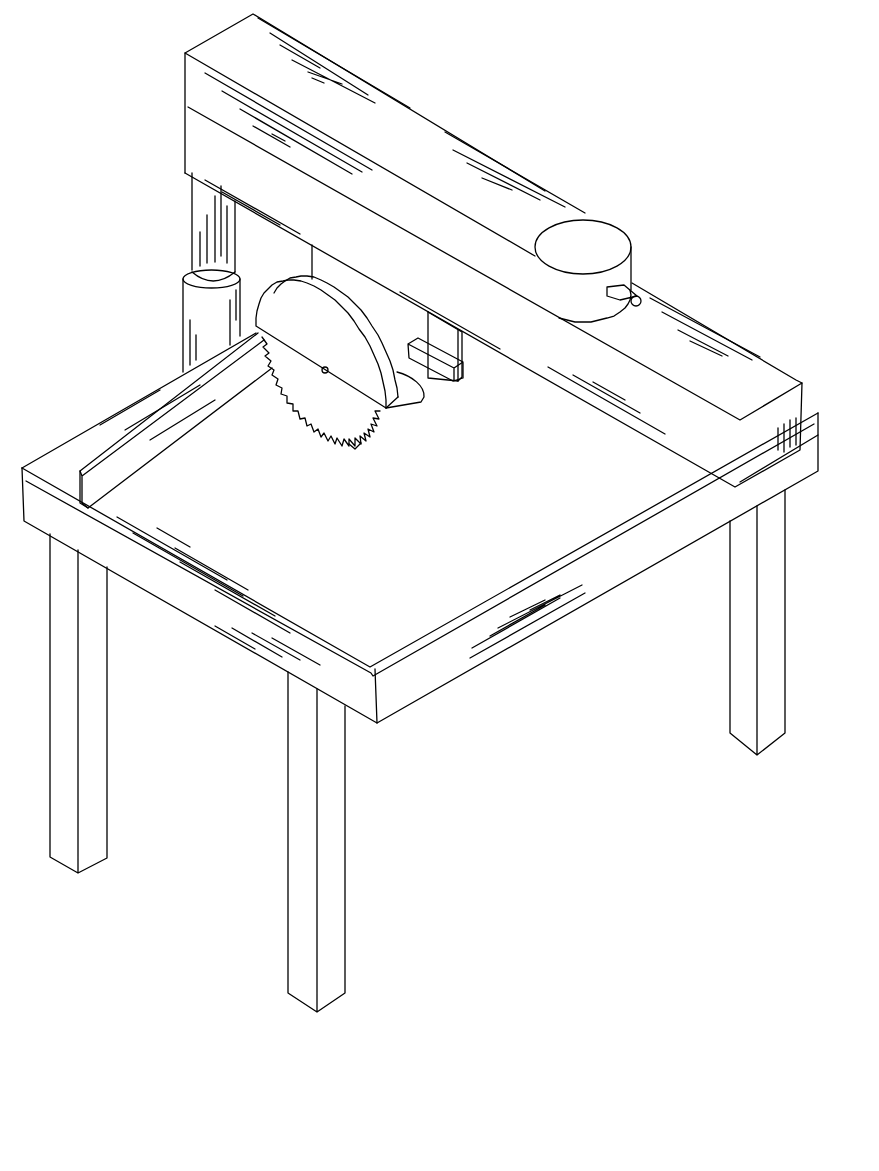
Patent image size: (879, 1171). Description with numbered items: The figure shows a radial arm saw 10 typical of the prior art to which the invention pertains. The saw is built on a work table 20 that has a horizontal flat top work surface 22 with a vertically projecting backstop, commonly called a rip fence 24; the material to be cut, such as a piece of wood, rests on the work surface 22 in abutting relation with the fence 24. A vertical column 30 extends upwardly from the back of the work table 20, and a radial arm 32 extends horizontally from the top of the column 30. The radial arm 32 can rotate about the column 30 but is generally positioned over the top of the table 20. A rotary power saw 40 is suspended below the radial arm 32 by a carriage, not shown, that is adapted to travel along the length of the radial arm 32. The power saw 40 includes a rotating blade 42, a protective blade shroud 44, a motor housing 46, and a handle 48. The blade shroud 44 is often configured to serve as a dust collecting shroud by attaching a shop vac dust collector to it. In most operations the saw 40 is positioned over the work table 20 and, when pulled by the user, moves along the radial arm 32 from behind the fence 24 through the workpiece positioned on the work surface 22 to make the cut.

The radial arm saw 10 is at (113, 271).
The work table 20 is at (177, 632).
The work surface 22 is at (400, 513).
The rip fence 24 is at (147, 457).
The vertical column 30 is at (200, 222).
The radial arm 32 is at (390, 259).
The rotary power saw 40 is at (424, 395).
The rotating blade 42 is at (355, 432).
The blade shroud 44 is at (330, 342).
The motor housing 46 is at (390, 307).
The handle 48 is at (483, 367).